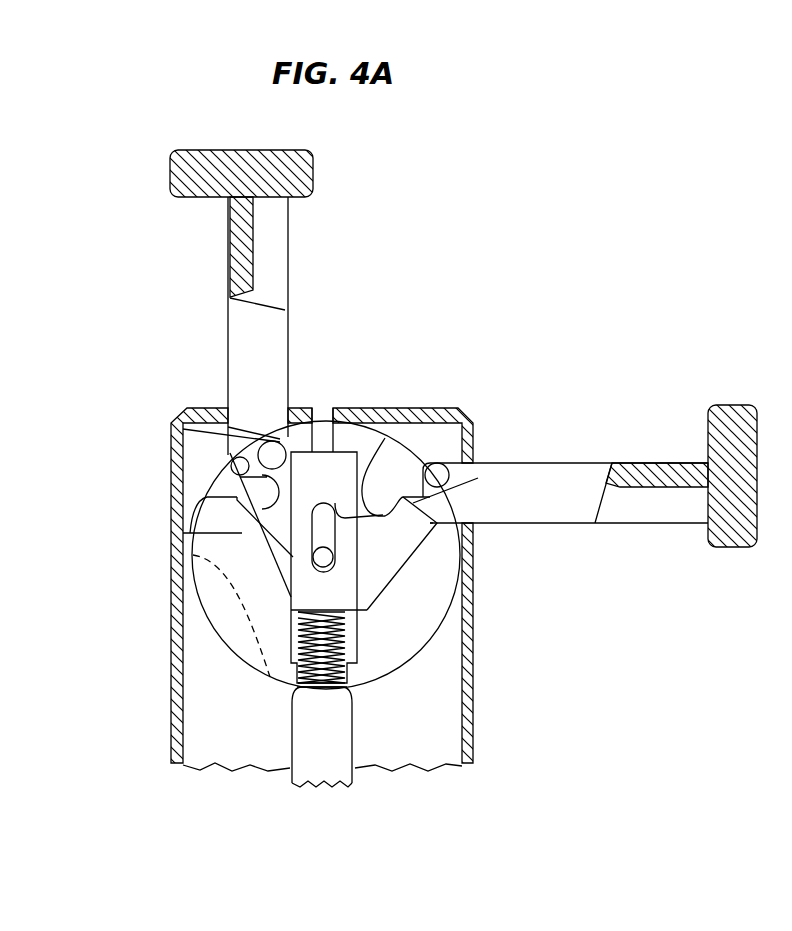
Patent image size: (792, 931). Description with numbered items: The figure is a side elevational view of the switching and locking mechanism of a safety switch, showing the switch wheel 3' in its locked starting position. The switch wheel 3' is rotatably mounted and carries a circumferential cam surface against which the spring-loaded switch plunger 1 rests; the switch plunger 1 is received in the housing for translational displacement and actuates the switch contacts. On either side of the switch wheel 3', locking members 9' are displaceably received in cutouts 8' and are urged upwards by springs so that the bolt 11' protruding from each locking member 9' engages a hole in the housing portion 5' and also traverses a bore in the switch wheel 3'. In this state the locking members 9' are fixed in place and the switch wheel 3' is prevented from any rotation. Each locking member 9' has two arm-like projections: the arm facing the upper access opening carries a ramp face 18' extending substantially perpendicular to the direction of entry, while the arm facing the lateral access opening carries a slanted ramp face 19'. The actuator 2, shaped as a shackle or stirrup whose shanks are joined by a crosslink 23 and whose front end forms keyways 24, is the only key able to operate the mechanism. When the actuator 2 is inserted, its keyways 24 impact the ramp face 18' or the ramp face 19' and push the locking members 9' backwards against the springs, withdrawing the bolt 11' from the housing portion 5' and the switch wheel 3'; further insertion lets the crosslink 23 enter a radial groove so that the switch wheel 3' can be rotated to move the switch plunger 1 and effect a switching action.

The switch plunger 1 is at (322, 773).
The actuator 2 is at (305, 150).
The switch wheel 3' is at (357, 555).
The housing portion 5' is at (349, 589).
The cutouts 8' is at (171, 515).
The locking members 9' is at (360, 513).
The bolt 11' is at (342, 399).
The ramp face 18' is at (191, 426).
The ramp face 19' is at (593, 453).
The crosslink 23 is at (238, 458).
The keyways 24 is at (278, 435).